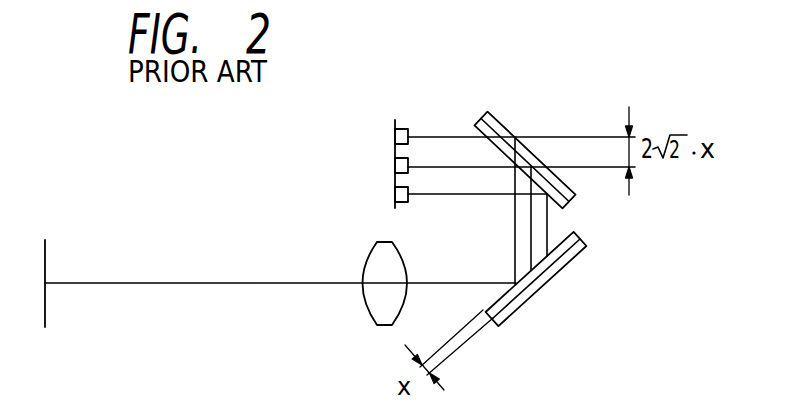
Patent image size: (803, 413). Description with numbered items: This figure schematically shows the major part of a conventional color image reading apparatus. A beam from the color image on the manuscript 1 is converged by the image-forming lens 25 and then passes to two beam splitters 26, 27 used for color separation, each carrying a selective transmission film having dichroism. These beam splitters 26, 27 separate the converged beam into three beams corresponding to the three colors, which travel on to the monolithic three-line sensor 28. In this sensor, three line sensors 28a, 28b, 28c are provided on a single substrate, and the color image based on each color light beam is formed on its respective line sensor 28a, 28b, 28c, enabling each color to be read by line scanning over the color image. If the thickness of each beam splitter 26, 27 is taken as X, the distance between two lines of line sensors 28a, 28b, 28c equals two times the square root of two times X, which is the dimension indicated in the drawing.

The manuscript 1 is at (45, 240).
The image-forming lens 25 is at (378, 260).
The beam splitter 26 is at (567, 264).
The beam splitter 27 is at (506, 127).
The monolithic 3-line sensor 28 is at (396, 150).
The line sensor 28a is at (399, 125).
The line sensor 28b is at (408, 161).
The line sensor 28c is at (408, 198).